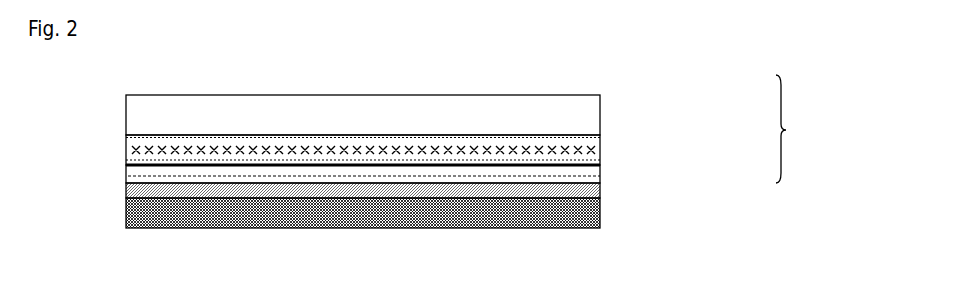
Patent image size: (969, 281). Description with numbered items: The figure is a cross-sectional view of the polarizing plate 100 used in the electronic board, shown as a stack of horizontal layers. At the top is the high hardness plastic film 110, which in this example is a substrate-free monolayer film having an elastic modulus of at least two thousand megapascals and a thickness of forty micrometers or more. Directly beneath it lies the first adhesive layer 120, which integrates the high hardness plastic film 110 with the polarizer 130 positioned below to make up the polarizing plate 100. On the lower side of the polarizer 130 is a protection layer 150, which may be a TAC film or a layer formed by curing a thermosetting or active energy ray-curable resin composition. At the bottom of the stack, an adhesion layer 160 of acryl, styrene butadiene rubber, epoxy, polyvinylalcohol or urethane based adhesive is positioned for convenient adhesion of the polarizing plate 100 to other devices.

The polarizing plate 100 is at (806, 129).
The high hardness plastic film 110 is at (587, 122).
The first adhesive layer 120 is at (598, 143).
The polarizer 130 is at (587, 177).
The protection layer 150 is at (598, 195).
The adhesion layer 160 is at (600, 222).